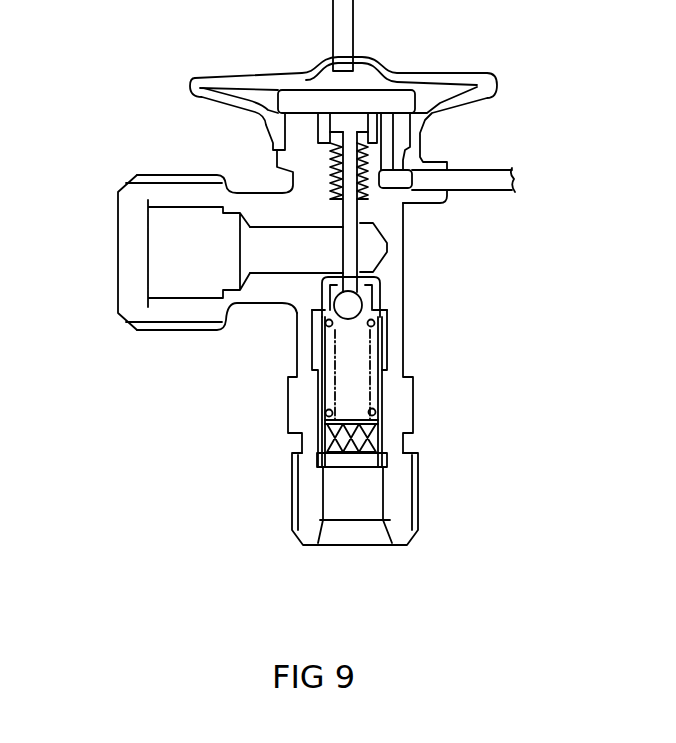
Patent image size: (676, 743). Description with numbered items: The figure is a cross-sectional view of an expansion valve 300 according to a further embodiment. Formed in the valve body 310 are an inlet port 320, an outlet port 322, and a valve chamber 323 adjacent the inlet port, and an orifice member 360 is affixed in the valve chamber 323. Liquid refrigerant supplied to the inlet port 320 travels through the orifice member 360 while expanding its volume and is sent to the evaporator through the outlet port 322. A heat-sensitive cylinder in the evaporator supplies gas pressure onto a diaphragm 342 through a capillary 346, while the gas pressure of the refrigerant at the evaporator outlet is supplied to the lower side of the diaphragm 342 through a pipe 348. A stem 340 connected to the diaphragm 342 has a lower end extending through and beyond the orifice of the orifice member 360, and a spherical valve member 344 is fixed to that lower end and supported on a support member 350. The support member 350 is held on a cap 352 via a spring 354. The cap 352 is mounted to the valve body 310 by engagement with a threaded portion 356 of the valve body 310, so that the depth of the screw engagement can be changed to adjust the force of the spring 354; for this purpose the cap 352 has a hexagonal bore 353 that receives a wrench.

The expansion valve 300 is at (516, 299).
The valve body 310 is at (405, 407).
The inlet port 320 is at (355, 502).
The outlet port 322 is at (183, 261).
The valve chamber 323 is at (357, 357).
The stem 340 is at (352, 240).
The diaphragm 342 is at (425, 90).
The valve member 344 is at (344, 303).
The capillary 346 is at (343, 16).
The pipe 348 is at (465, 180).
The support member 350 is at (352, 330).
The cap 352 is at (332, 443).
The hexagonal bore 353 is at (340, 460).
The spring 354 is at (384, 412).
The threaded portion 356 is at (390, 443).
The orifice member 360 is at (378, 284).